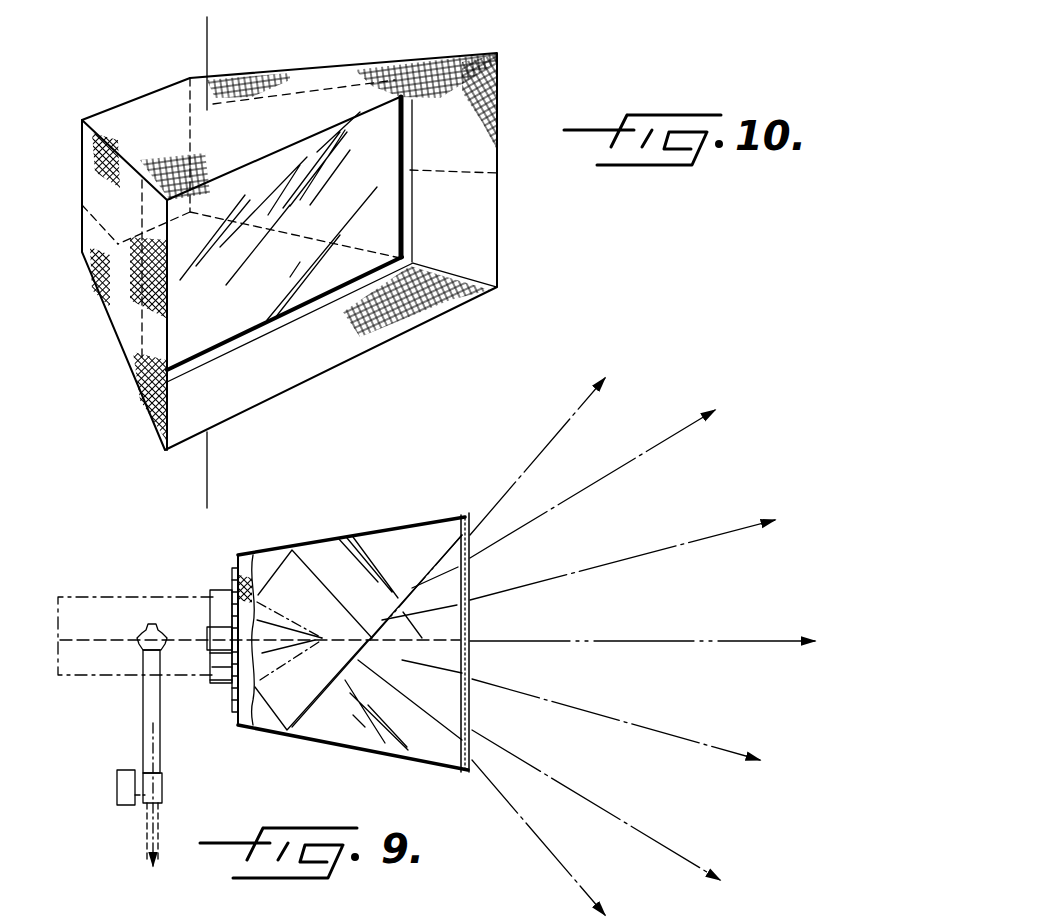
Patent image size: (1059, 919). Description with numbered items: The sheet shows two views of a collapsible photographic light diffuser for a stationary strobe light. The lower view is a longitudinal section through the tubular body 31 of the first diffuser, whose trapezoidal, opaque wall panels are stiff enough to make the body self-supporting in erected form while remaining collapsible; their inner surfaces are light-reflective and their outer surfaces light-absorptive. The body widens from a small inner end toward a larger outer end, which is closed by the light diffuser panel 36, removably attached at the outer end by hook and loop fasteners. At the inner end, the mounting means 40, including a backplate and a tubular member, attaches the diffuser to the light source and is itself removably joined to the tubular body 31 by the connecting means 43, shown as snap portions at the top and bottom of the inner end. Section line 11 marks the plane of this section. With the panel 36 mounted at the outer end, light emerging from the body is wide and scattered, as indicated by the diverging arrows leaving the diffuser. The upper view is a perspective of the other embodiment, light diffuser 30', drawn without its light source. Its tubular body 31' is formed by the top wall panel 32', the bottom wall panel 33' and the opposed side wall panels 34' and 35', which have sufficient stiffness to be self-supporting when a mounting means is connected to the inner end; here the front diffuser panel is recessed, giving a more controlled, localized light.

In FIG. 10, the section line 11 is at (250, 24).
In FIG. 9, the section line 11 is at (248, 470).
In FIG. 10, the light diffuser 30' is at (344, 251).
In FIG. 10, the tubular body 31' is at (318, 110).
In FIG. 10, the top wall panel 32' is at (241, 169).
In FIG. 10, the bottom wall panel 33' is at (332, 256).
In FIG. 10, the side wall panel 34' is at (449, 158).
In FIG. 10, the side wall panel 35' is at (107, 286).
In FIG. 9, the tubular body 31 is at (353, 626).
In FIG. 9, the light diffuser panel 36 is at (470, 622).
In FIG. 9, the mounting means 40 is at (221, 692).
In FIG. 9, the connecting means 43 is at (231, 573).